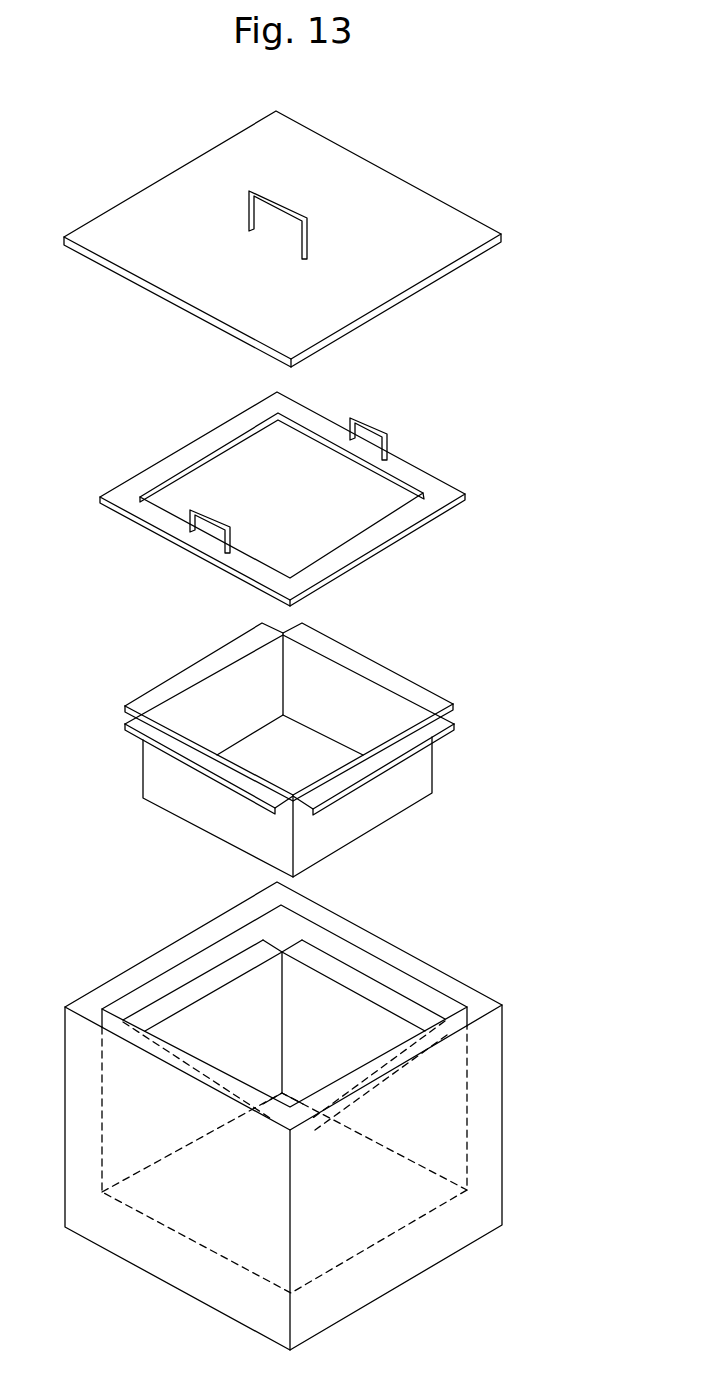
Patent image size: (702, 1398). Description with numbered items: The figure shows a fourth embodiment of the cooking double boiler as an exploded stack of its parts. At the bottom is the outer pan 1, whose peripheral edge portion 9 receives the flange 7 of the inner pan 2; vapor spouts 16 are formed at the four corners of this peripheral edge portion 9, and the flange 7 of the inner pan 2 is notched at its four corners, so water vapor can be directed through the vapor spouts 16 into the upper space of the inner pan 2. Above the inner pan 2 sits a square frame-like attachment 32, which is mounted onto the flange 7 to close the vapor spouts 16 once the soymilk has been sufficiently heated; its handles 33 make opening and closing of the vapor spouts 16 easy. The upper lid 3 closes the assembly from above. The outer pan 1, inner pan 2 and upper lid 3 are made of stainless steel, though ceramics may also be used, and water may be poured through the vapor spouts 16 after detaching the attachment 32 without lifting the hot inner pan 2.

The outer pan 1 is at (488, 1133).
The inner pan 2 is at (415, 780).
The upper lid 3 is at (409, 259).
The flange 7 is at (397, 687).
The peripheral edge portion 9 is at (385, 998).
The vapor spouts 16 is at (287, 940).
The attachment 32 is at (443, 493).
The handles 33 is at (375, 422).